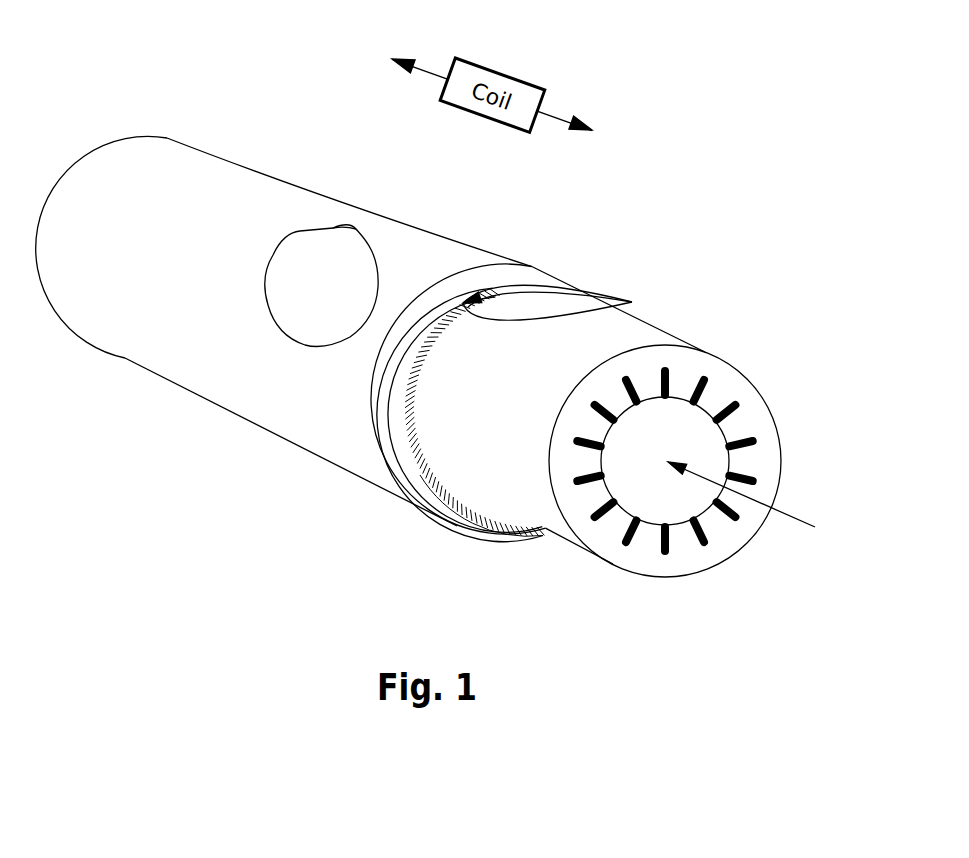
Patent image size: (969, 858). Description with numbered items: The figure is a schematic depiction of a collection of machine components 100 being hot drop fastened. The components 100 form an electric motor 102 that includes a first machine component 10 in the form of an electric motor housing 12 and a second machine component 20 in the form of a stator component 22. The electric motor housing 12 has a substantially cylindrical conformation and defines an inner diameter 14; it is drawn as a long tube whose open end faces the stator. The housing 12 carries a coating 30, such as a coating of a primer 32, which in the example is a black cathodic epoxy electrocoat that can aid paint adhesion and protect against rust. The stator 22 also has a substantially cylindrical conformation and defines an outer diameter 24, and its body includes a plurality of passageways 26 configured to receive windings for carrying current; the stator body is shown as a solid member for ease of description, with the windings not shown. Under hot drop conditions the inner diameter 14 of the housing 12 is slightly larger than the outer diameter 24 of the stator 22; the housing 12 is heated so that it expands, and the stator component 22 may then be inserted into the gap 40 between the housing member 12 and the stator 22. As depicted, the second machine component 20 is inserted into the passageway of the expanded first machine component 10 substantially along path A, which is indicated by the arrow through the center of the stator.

The first machine component 10 is at (150, 203).
The electric motor housing 12 is at (270, 217).
The inner diameter 14 is at (562, 343).
The second machine component 20 is at (622, 342).
The stator component 22 is at (632, 302).
The outer diameter 24 is at (506, 480).
The passageways 26 is at (728, 410).
The coating 30 is at (366, 258).
The primer 32 is at (327, 253).
The gap 40 is at (521, 278).
The machine components 100 is at (166, 644).
The electric motor 102 is at (130, 390).
The path A is at (758, 503).